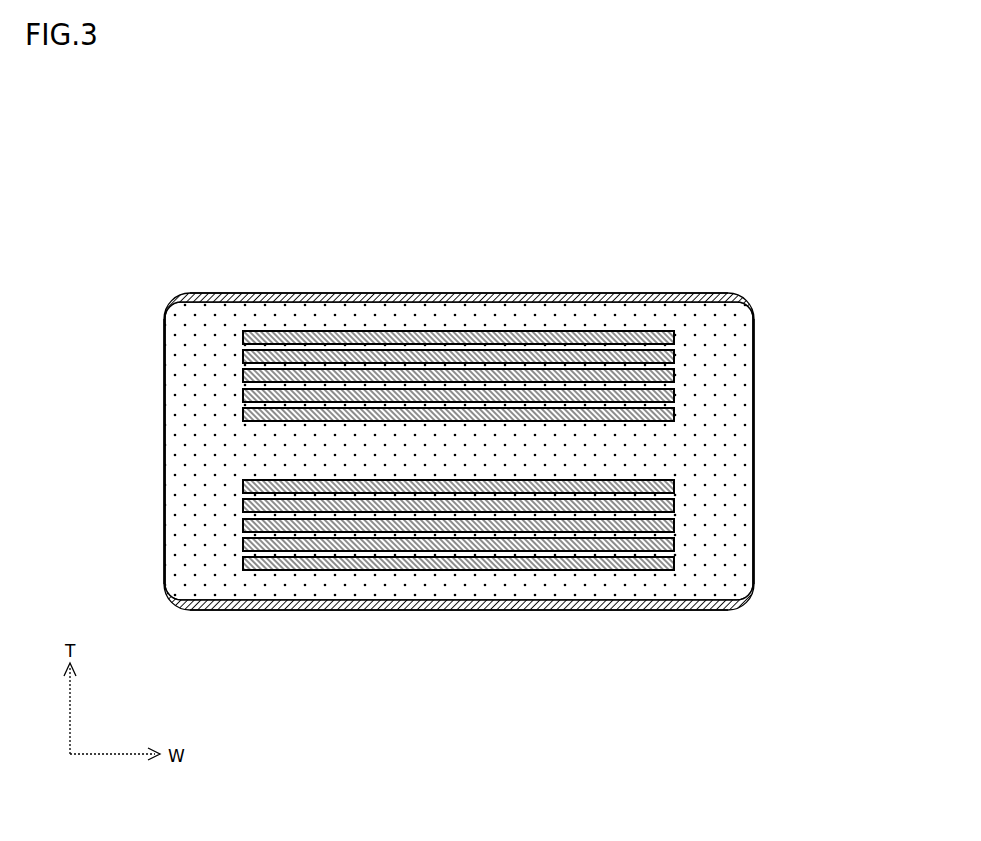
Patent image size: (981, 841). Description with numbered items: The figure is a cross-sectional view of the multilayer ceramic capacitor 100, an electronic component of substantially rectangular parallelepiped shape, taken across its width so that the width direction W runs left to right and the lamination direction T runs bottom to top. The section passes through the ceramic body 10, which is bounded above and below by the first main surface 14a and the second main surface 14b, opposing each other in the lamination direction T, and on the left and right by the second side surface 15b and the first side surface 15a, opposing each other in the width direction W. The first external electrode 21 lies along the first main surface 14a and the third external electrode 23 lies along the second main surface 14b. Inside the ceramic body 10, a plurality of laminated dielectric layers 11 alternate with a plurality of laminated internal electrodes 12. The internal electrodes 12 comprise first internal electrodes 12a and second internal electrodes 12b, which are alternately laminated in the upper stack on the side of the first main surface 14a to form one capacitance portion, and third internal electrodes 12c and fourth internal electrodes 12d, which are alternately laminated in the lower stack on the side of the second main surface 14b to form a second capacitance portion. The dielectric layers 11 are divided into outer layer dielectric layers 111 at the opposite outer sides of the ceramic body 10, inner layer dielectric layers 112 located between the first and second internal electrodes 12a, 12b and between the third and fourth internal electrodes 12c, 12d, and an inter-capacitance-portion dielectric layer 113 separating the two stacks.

The multilayer ceramic capacitor 100 is at (427, 245).
The ceramic body 10 is at (163, 350).
The dielectric layers 11 is at (459, 499).
The outer layer dielectric layers 111 is at (297, 323).
The inner layer dielectric layers 112 is at (377, 390).
The inter-capacitance-portion dielectric layer 113 is at (547, 455).
The internal electrodes 12 is at (458, 426).
The first internal electrodes 12a is at (460, 331).
The second internal electrodes 12b is at (533, 350).
The third internal electrodes 12c is at (305, 572).
The fourth internal electrodes 12d is at (372, 555).
The first main surface 14a is at (588, 293).
The second main surface 14b is at (607, 610).
The first side surface 15a is at (754, 432).
The second side surface 15b is at (164, 428).
The first external electrode 21 is at (684, 293).
The third external electrode 23 is at (690, 610).